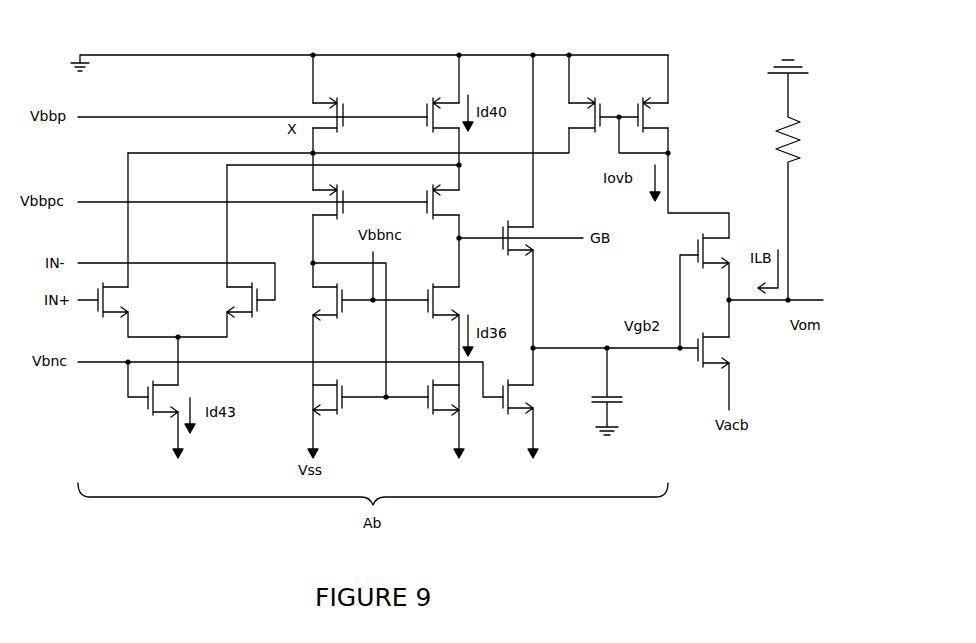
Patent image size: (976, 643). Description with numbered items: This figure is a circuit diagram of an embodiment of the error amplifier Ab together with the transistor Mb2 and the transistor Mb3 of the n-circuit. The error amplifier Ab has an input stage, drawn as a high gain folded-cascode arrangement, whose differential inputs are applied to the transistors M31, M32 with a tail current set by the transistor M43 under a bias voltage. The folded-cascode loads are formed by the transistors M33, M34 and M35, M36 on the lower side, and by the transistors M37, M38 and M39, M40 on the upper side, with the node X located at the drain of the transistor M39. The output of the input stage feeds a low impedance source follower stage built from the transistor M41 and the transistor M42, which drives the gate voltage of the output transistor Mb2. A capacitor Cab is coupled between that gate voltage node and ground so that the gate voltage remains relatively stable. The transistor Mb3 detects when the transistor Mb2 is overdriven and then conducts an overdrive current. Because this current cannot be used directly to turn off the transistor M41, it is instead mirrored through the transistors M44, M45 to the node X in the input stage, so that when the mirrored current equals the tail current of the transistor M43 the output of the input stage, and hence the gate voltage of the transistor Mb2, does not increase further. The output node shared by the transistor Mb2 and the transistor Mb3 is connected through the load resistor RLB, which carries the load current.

The input stage transistor M31 is at (134, 300).
The input stage transistor M32 is at (223, 300).
The input stage transistor M33 is at (308, 397).
The input stage transistor M34 is at (431, 411).
The input stage transistor M35 is at (336, 315).
The input stage transistor M36 is at (436, 315).
The input stage transistor M37 is at (305, 203).
The input stage transistor M38 is at (466, 202).
The input stage transistor M39 is at (302, 108).
The input stage transistor M40 is at (428, 101).
The source follower stage transistor M41 is at (540, 224).
The source follower stage transistor M42 is at (539, 397).
The input stage tail current transistor M43 is at (184, 391).
The current mirror transistor M44 is at (594, 95).
The current mirror transistor M45 is at (675, 115).
The transistor MB3 Mb3 is at (736, 236).
The transistor MB2 Mb2 is at (736, 350).
The capacitor Cab is at (627, 391).
The load resistor RLB is at (801, 180).